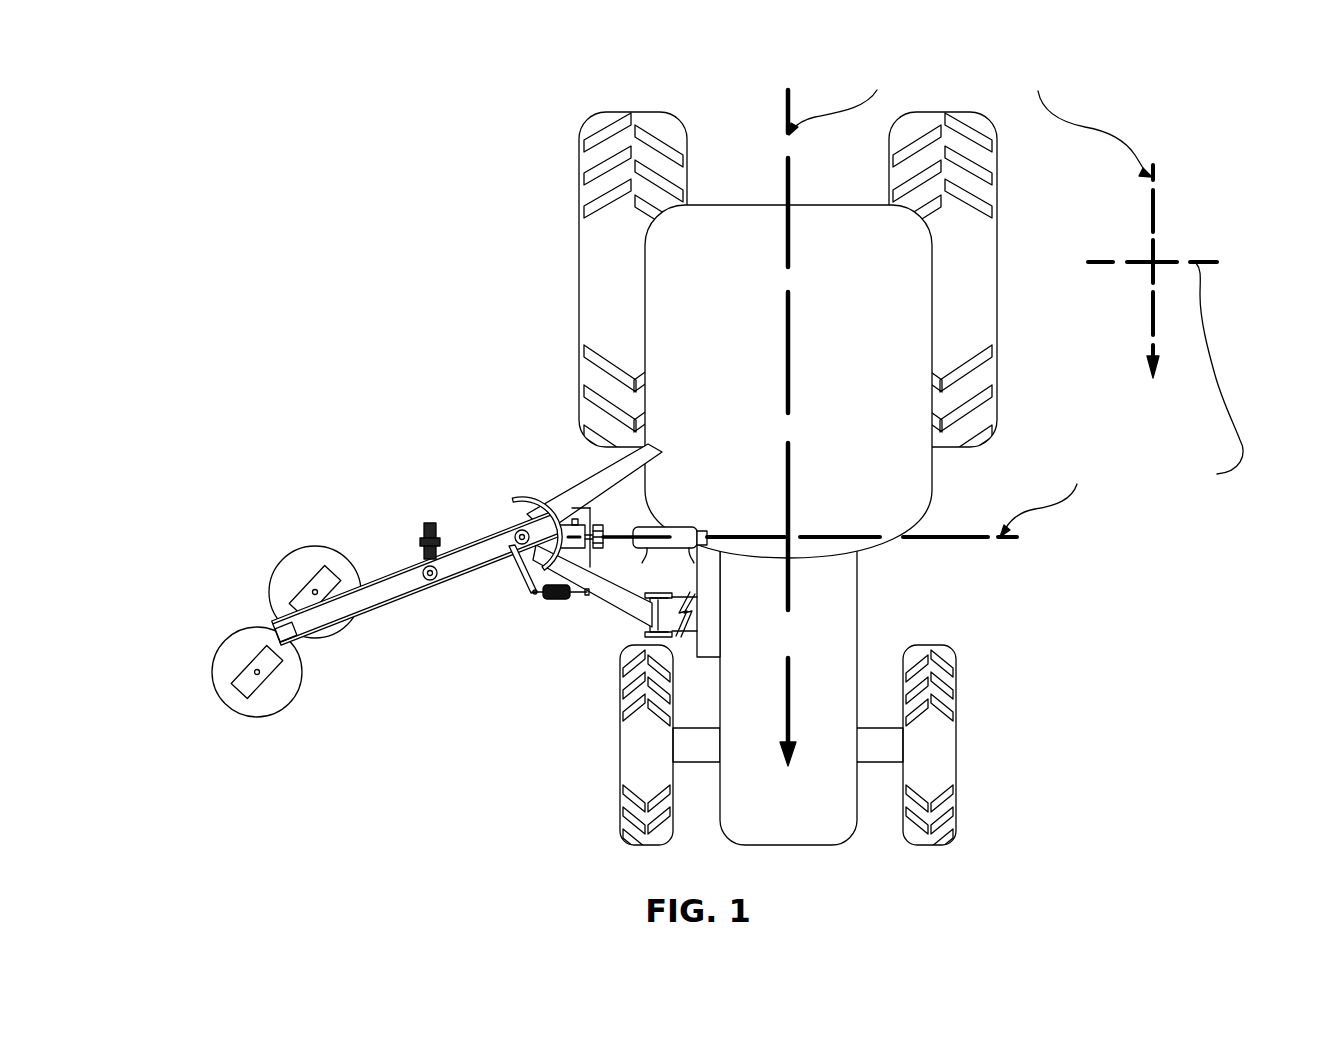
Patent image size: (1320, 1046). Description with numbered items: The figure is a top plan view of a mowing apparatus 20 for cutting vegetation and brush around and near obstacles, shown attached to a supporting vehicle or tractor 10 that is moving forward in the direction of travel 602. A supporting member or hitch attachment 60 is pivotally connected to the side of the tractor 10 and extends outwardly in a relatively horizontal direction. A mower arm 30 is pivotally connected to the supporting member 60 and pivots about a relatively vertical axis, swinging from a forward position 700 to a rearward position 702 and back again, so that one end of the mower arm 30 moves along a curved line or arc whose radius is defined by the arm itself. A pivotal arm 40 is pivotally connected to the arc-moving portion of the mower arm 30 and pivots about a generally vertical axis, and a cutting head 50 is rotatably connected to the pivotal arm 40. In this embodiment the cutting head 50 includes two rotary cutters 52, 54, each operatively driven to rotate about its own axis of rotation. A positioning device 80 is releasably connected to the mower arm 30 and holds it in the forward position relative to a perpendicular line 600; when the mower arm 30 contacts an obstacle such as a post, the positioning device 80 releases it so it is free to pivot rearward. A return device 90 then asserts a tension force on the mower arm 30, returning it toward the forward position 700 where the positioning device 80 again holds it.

The tractor 10 is at (862, 610).
The mowing apparatus 20 is at (309, 428).
The mower arm 30 is at (444, 592).
The pivotal arm 40 is at (280, 606).
The cutting head 50 is at (255, 616).
The rotary cutter 52 is at (220, 703).
The rotary cutter 54 is at (320, 545).
The supporting member 60 is at (566, 476).
The positioning device 80 is at (506, 496).
The return device 90 is at (555, 615).
The perpendicular line 600 is at (976, 537).
The direction of travel 602 is at (790, 347).
The forward position 700 is at (1087, 306).
The rearward position 702 is at (1087, 216).